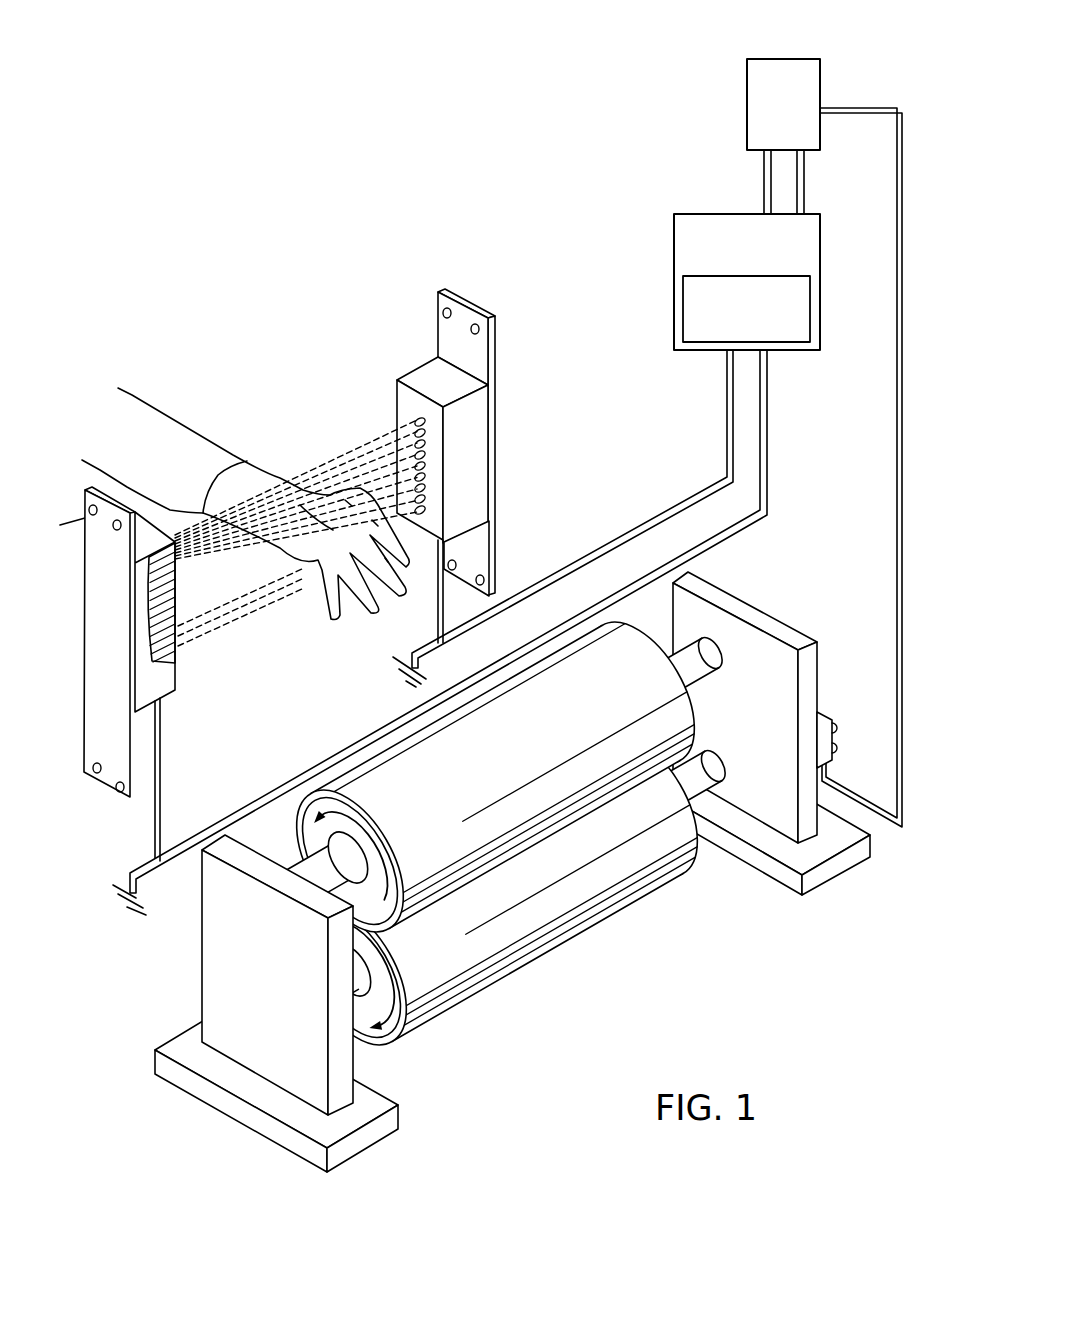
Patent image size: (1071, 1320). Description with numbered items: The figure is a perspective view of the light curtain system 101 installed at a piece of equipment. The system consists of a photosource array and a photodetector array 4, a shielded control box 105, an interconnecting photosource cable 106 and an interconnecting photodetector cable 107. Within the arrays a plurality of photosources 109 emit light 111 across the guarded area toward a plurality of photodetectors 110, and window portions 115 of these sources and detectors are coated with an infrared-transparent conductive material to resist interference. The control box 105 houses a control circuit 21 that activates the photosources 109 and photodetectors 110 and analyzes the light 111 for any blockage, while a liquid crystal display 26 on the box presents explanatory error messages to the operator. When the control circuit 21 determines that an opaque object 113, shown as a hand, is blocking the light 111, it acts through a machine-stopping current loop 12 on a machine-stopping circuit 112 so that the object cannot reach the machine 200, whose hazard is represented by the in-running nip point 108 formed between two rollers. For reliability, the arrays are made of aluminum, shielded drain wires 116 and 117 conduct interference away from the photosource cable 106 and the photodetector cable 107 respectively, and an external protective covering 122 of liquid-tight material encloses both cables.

The photodetector array 4 is at (84, 527).
The machine-stopping current loop 12 is at (797, 173).
The control circuit 21 is at (697, 217).
The liquid crystal display 26 is at (760, 316).
The light curtain system 101 is at (506, 247).
The shielded control box 105 is at (674, 265).
The interconnecting photosource cable 106 is at (727, 401).
The interconnecting photodetector cable 107 is at (770, 409).
The in-running nip point 108 is at (304, 848).
The photosources 109 is at (383, 400).
The photodetectors 110 is at (176, 650).
The light 111 is at (238, 606).
The machine-stopping circuit 112 is at (747, 100).
The opaque object 113 is at (167, 418).
The window portions 115 is at (430, 454).
The shielded drain wire 116 is at (426, 648).
The shielded drain wire 117 is at (148, 860).
The external protective covering 122 is at (718, 535).
The machine 200 is at (750, 729).